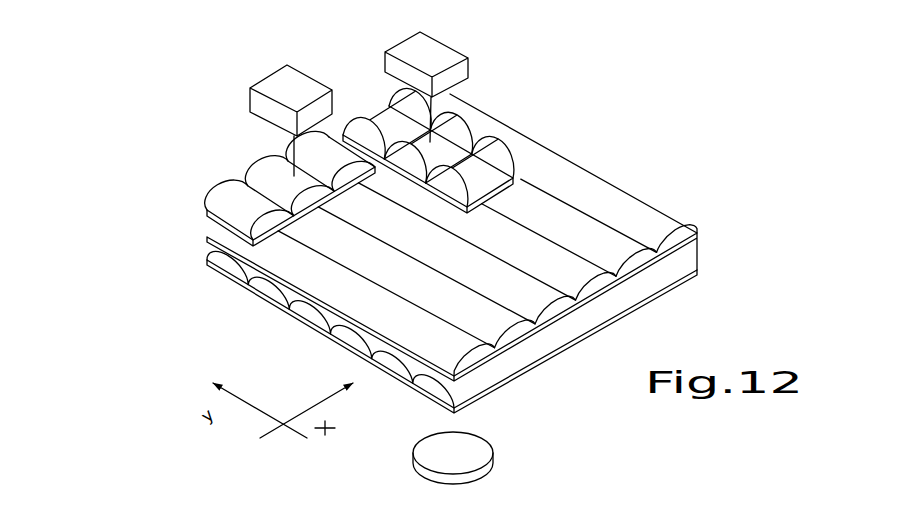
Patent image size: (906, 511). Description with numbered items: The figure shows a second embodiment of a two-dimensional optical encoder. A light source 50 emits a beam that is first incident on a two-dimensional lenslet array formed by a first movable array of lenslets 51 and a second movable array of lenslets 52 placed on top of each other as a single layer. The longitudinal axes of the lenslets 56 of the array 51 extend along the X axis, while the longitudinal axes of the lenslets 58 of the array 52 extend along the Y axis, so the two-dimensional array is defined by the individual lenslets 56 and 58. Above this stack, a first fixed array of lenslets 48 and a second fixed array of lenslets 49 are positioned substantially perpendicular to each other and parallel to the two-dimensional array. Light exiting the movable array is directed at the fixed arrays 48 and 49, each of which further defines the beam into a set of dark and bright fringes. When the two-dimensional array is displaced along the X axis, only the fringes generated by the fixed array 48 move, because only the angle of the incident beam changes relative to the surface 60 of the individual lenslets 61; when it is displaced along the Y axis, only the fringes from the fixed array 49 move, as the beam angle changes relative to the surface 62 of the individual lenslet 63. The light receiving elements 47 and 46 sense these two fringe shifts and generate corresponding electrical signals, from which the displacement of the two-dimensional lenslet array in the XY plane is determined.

The light receiving element 46 is at (443, 43).
The light receiving element 47 is at (267, 76).
The first fixed array of lenslets 48 is at (207, 213).
The second fixed array of lenslets 49 is at (510, 177).
The light source 50 is at (486, 440).
The first movable array of lenslets 51 is at (208, 258).
The second movable array of lenslets 52 is at (695, 232).
The lenslets 56 is at (267, 293).
The lenslets 58 is at (676, 243).
The surface 60 is at (228, 186).
The individual lenslets 61 is at (273, 218).
The surface 62 is at (367, 121).
The individual lenslet 63 is at (443, 183).